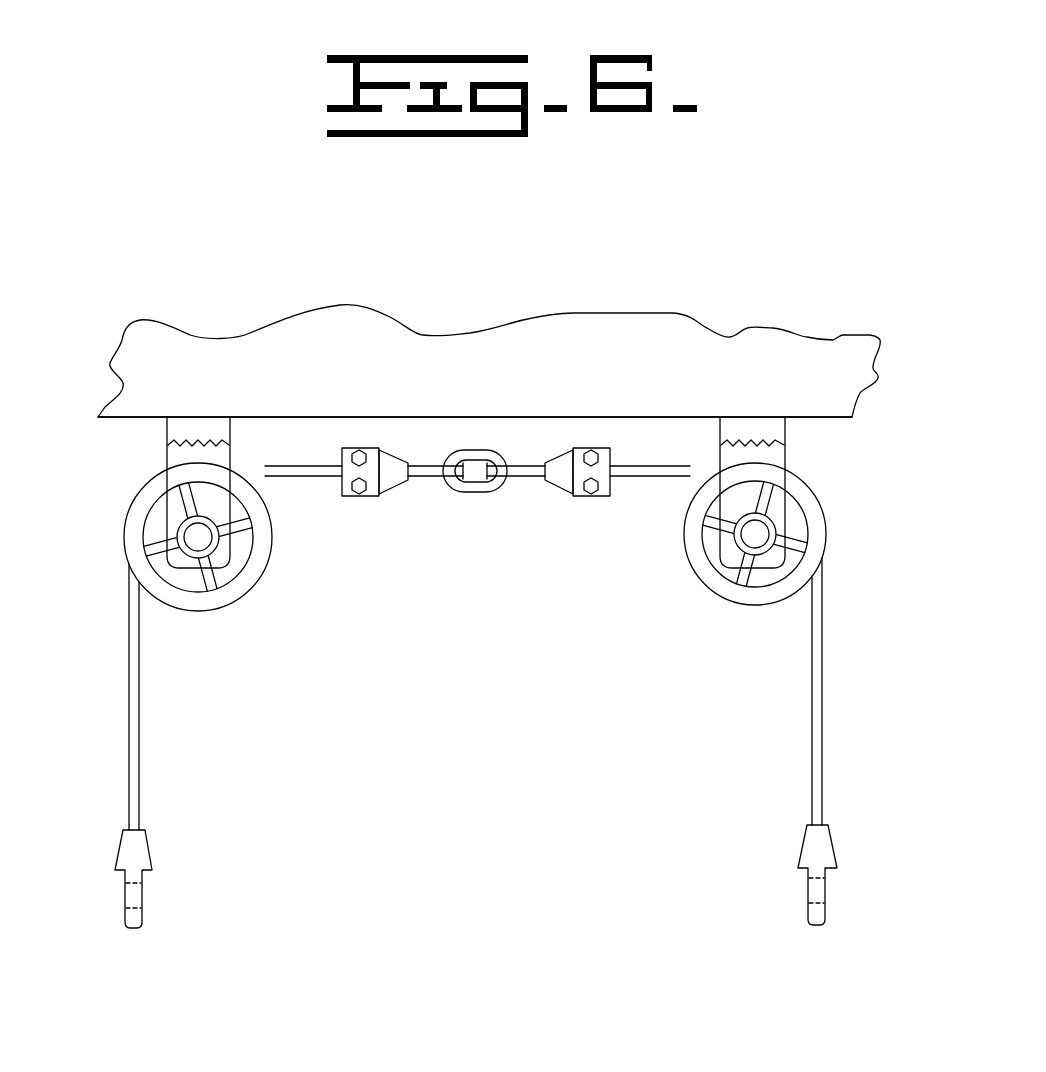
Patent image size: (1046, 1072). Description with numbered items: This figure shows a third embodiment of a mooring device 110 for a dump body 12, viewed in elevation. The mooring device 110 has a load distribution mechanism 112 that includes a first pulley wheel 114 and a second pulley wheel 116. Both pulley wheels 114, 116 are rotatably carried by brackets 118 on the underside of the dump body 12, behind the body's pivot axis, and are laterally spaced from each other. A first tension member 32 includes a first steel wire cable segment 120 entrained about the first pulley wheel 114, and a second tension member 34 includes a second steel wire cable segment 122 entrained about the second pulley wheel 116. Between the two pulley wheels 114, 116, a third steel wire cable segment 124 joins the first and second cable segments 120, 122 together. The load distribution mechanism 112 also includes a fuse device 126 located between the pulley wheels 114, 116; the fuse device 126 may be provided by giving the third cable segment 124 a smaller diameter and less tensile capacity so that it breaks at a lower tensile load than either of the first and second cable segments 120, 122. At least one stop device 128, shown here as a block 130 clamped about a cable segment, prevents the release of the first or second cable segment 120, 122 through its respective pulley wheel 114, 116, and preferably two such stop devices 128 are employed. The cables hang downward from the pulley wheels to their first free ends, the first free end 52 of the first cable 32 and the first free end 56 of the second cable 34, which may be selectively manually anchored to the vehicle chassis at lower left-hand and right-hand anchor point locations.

The dump body 12 is at (628, 316).
The first tension member 32 is at (136, 697).
The second tension member 34 is at (766, 691).
The first free end of the first cable 52 is at (137, 917).
The first free end of the second cable 56 is at (818, 913).
The mooring device 110 is at (824, 741).
The load distribution mechanism 112 is at (340, 556).
The first pulley wheel 114 is at (134, 534).
The second pulley wheel 116 is at (818, 537).
The brackets 118 is at (178, 425).
The first steel wire cable segment 120 is at (139, 730).
The second steel wire cable segment 122 is at (812, 724).
The third steel wire cable segment 124 is at (268, 466).
The fuse device 126 is at (500, 453).
The stop device 128 is at (353, 496).
The block 130 is at (375, 450).